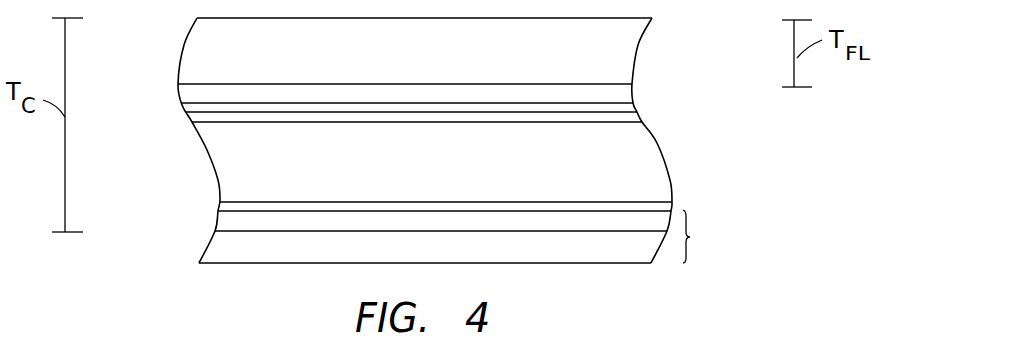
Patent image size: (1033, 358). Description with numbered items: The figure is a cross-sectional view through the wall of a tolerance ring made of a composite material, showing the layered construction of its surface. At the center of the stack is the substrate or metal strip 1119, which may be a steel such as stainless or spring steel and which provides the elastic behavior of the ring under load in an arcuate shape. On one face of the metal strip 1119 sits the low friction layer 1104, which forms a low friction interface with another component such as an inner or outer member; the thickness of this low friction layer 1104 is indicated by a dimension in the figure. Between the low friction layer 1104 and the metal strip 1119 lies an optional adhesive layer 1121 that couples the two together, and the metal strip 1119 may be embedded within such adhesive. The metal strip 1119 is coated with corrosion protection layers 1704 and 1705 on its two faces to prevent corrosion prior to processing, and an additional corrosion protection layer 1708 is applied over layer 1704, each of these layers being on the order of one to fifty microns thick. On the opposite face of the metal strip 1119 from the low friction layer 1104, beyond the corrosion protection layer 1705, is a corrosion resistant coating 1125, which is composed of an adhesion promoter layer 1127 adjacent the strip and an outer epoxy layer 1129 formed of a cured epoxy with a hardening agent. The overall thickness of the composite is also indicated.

The low friction layer 1104 is at (182, 54).
The adhesive layer 1121 is at (179, 98).
The corrosion protection layer 1708 is at (637, 108).
The corrosion protection layer 1704 is at (641, 120).
The metal strip 1119 is at (201, 149).
The corrosion protection layer 1705 is at (673, 207).
The adhesion promoter layer 1127 is at (217, 220).
The epoxy layer 1129 is at (204, 252).
The corrosion resistant coating 1125 is at (715, 236).